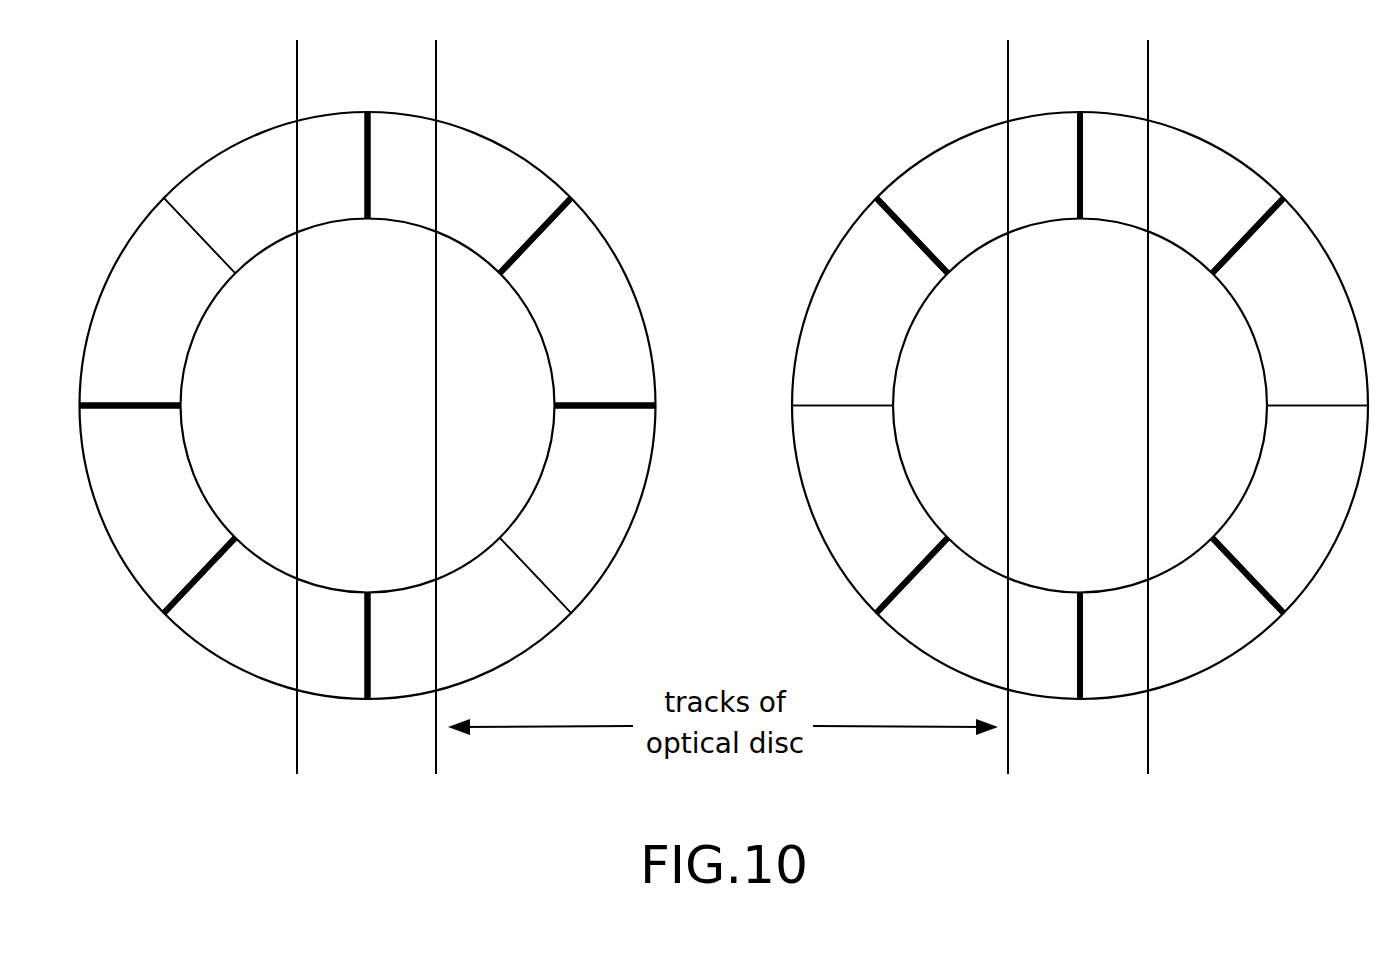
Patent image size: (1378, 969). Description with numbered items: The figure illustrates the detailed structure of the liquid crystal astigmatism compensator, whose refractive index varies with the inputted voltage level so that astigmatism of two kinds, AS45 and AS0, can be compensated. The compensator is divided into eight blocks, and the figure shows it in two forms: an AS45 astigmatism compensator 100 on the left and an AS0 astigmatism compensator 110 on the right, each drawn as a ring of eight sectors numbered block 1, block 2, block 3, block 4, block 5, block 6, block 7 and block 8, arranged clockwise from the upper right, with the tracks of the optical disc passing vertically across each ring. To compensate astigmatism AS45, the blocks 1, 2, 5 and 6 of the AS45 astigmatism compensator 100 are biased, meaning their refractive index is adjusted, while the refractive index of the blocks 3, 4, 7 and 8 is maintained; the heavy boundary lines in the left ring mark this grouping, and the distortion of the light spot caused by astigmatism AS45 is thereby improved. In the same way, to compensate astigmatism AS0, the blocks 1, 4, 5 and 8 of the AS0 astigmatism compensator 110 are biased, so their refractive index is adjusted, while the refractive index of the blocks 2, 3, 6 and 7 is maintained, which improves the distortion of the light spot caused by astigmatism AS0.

The AS45 astigmatism compensator 100 is at (528, 162).
The AS0 astigmatism compensator 110 is at (1242, 160).
The block 1 is at (826, 192).
The block 2 is at (934, 302).
The block 3 is at (934, 510).
The block 4 is at (826, 618).
The block 5 is at (622, 618).
The block 6 is at (514, 510).
The block 7 is at (514, 302).
The block 8 is at (622, 192).